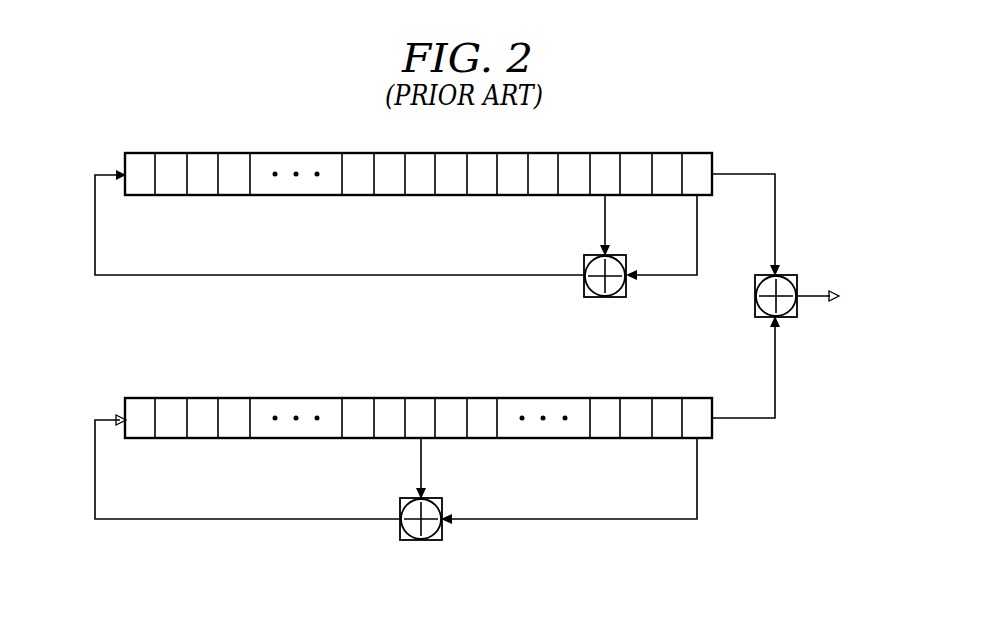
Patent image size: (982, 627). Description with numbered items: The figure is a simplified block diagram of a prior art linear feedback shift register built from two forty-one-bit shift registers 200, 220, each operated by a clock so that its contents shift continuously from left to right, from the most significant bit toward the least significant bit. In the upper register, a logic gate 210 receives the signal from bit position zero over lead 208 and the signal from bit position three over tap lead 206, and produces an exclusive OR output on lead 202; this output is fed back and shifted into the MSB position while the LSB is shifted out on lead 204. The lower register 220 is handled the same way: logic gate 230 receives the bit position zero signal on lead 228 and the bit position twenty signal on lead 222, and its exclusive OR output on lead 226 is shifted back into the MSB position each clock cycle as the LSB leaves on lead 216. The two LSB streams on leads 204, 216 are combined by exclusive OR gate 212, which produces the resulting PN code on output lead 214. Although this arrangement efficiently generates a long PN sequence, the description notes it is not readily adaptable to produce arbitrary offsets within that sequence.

The shift register 200 is at (279, 140).
The lead 202 is at (95, 225).
The lead 204 is at (740, 173).
The tap line from bit 3 of shift register 1 206 is at (608, 218).
The lead 208 is at (667, 278).
The logic gate 210 is at (605, 300).
The exclusive OR gate 212 is at (785, 318).
The lead 214 is at (813, 290).
The lead 216 is at (740, 420).
The shift register 220 is at (279, 383).
The lead 222 is at (421, 463).
The lead 226 is at (95, 468).
The lead 228 is at (568, 520).
The logic gate 230 is at (420, 542).